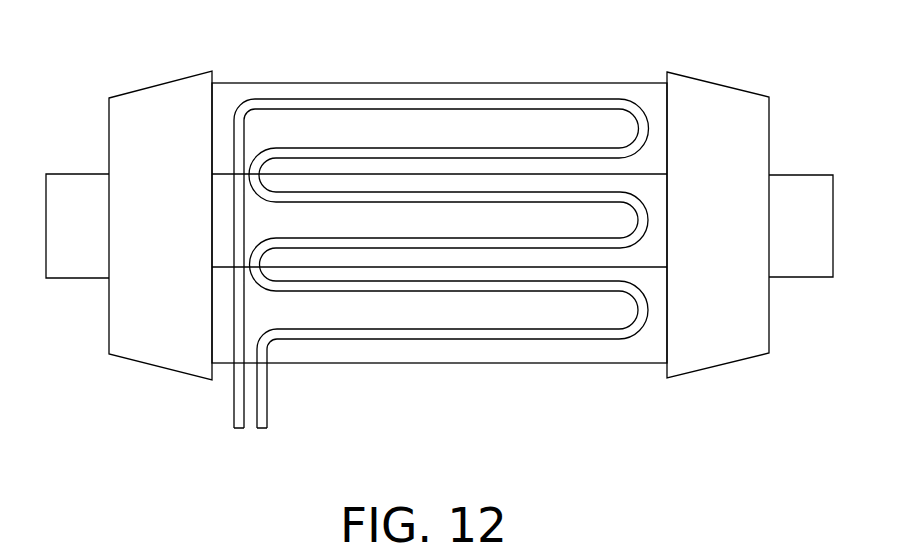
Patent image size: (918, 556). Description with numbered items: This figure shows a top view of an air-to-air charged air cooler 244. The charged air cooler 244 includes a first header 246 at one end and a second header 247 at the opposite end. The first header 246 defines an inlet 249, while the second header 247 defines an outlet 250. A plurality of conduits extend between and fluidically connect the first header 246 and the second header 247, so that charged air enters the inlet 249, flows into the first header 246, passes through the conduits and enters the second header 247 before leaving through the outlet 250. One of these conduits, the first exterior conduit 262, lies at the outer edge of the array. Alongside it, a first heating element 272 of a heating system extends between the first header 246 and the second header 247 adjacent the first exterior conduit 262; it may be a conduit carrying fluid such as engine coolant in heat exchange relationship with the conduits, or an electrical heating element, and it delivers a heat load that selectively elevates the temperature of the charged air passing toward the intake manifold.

The air-to-air charged air cooler 244 is at (435, 256).
The first header 246 is at (726, 369).
The second header 247 is at (153, 84).
The inlet 249 is at (804, 270).
The outlet 250 is at (77, 173).
The first exterior conduit 262 is at (229, 96).
The first heating element 272 is at (382, 361).